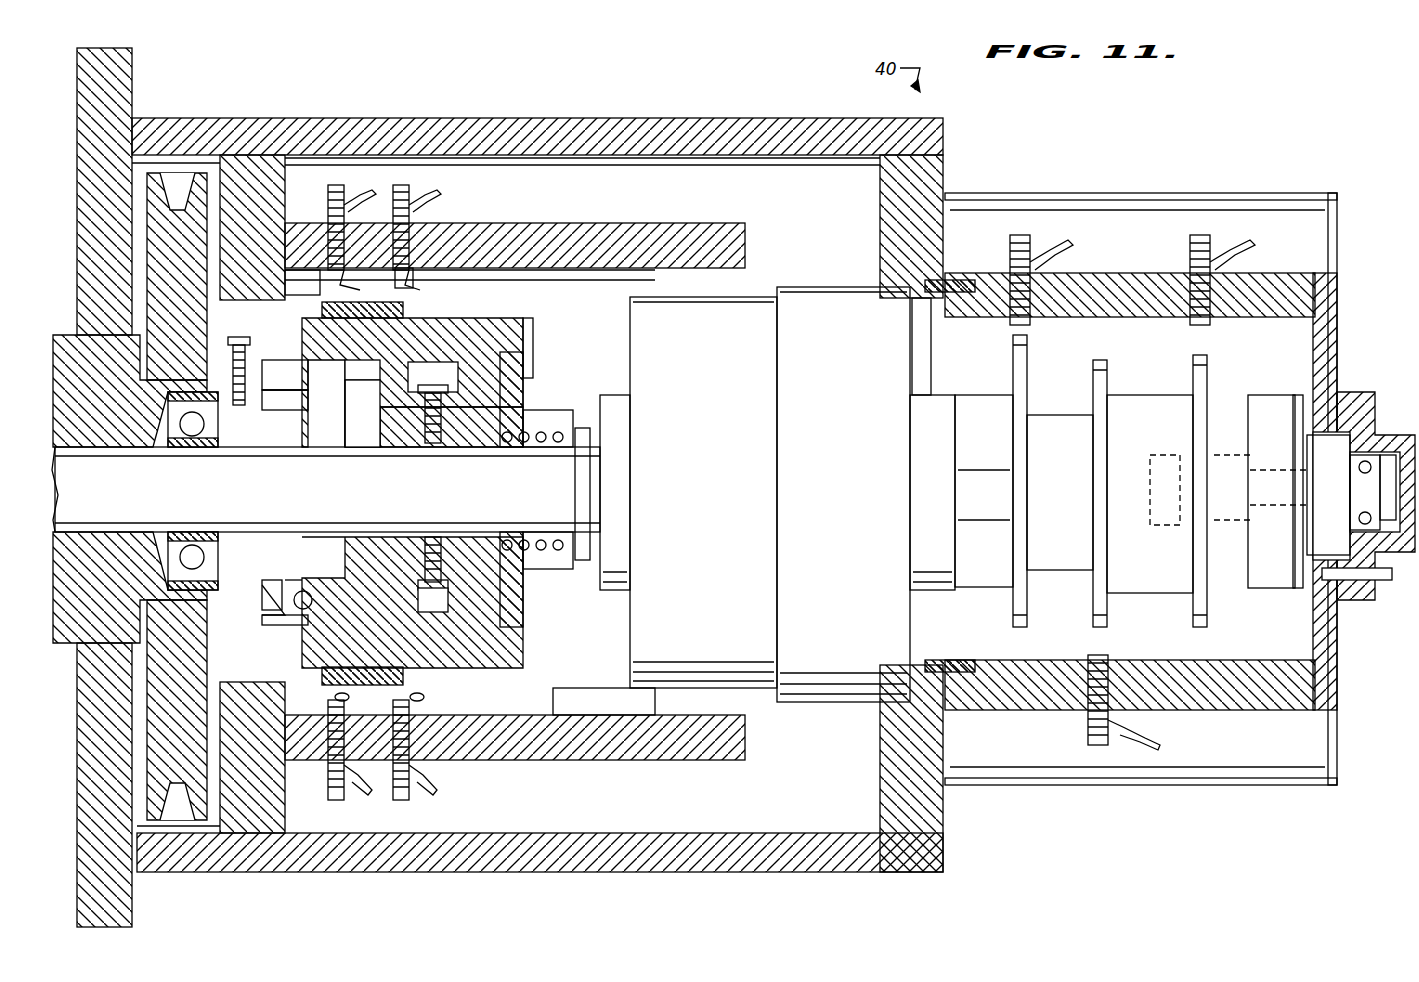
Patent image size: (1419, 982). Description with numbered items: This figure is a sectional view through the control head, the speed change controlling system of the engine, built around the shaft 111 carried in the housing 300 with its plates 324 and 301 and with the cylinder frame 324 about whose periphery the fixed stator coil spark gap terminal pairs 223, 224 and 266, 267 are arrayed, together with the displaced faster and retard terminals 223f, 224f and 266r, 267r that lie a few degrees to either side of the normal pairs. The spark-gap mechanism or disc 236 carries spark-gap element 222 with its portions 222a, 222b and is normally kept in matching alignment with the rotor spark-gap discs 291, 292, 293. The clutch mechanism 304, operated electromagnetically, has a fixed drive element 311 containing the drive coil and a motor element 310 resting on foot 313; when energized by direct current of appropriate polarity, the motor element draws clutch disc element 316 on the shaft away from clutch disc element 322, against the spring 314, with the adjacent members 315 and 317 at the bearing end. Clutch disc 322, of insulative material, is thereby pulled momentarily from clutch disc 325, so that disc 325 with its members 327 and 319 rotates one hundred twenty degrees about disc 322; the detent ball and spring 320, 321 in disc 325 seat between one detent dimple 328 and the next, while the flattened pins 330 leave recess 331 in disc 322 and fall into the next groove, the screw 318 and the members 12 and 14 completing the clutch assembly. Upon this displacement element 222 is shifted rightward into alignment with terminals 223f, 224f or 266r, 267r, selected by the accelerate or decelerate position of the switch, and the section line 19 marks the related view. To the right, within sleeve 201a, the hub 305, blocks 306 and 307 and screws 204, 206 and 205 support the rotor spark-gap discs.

The housing 300 is at (133, 97).
The shaft 111 is at (178, 493).
The detent spring 321 is at (285, 595).
The pin 330 is at (288, 430).
The cylinder frame 324 is at (683, 218).
The lower plate 301 is at (520, 760).
The spark-gap element 222 is at (410, 307).
The plate portion 222a is at (420, 270).
The plate portion 222b is at (500, 210).
The stator coil spark gap terminal 224 is at (349, 217).
The faster spark gap terminal 224f is at (345, 270).
The stator coil spark gap terminal 223 is at (412, 190).
The faster spark gap terminal 223f is at (420, 210).
The section line 19 is at (297, 170).
The clutch member 12 is at (280, 335).
The clutch member 14 is at (254, 489).
The spark-gap mechanism disc 236 is at (440, 318).
The screw 318 is at (433, 487).
The sleeve 319 is at (423, 437).
The clutch disc element 322 is at (310, 380).
The recess 331 is at (318, 410).
The pin 327 is at (290, 575).
The detent ball 320 is at (315, 598).
The detent dimple 328 is at (345, 620).
The clutch disc 325 is at (305, 668).
The clutch disc element 316 is at (528, 360).
The bearing 317 is at (528, 410).
The plate 315 is at (535, 425).
The spring 314 is at (548, 435).
The clutch mechanism 304 is at (754, 501).
The motor element 310 is at (718, 394).
The fixed drive element 311 is at (830, 394).
The motor foot 313 is at (655, 702).
The housing sleeve 201a is at (1010, 345).
The screw 204 is at (1025, 235).
The screw 206 is at (1192, 250).
The screw 205 is at (1088, 735).
The hub 305 is at (1000, 500).
The rotor spark-gap disc 291 is at (1027, 405).
The rotor spark-gap disc 292 is at (1103, 385).
The rotor spark-gap disc 293 is at (1205, 383).
The block 306 is at (1172, 520).
The block 307 is at (1282, 508).
The stator coil spark gap terminal 266 is at (330, 800).
The retard spark gap terminal 266r is at (355, 700).
The stator coil spark gap terminal 267 is at (405, 800).
The retard spark gap terminal 267r is at (425, 700).